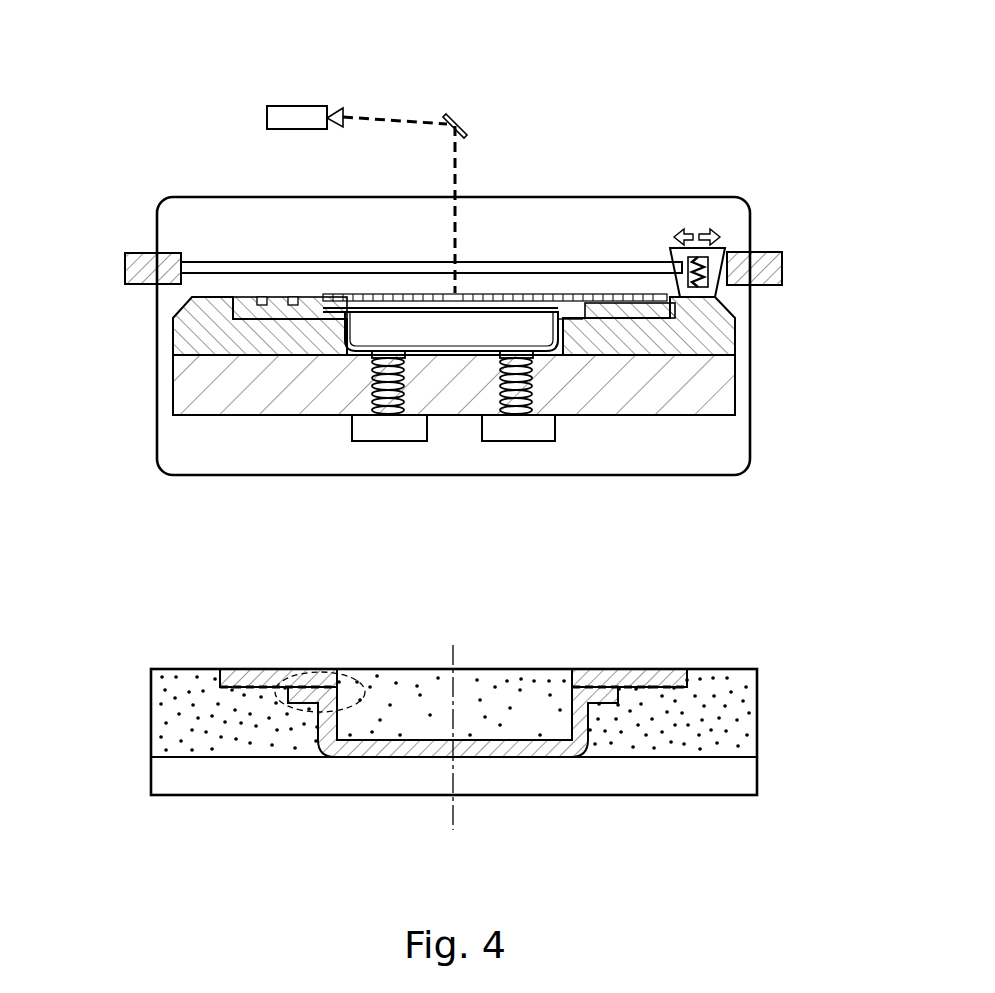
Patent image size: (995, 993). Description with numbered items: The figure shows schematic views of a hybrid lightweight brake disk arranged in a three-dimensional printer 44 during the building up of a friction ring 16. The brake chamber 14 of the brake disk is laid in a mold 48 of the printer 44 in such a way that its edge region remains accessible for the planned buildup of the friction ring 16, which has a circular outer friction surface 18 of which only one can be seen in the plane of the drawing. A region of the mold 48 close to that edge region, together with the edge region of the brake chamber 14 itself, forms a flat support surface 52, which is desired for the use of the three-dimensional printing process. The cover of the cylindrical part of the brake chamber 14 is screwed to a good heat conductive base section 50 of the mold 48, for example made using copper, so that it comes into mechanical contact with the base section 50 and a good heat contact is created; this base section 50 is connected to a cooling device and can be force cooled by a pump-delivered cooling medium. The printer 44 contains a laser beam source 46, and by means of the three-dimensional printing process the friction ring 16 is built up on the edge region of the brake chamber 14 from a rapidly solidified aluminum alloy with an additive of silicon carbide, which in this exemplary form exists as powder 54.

The brake chamber 14 is at (610, 415).
The friction ring 16 is at (613, 280).
The friction surface 18 is at (278, 668).
The 3D-printer 44 is at (449, 439).
The laser beam source 46 is at (299, 106).
The mold 48 is at (765, 388).
The base section 50 is at (172, 384).
The support surface 52 is at (627, 688).
The powder 54 is at (708, 248).